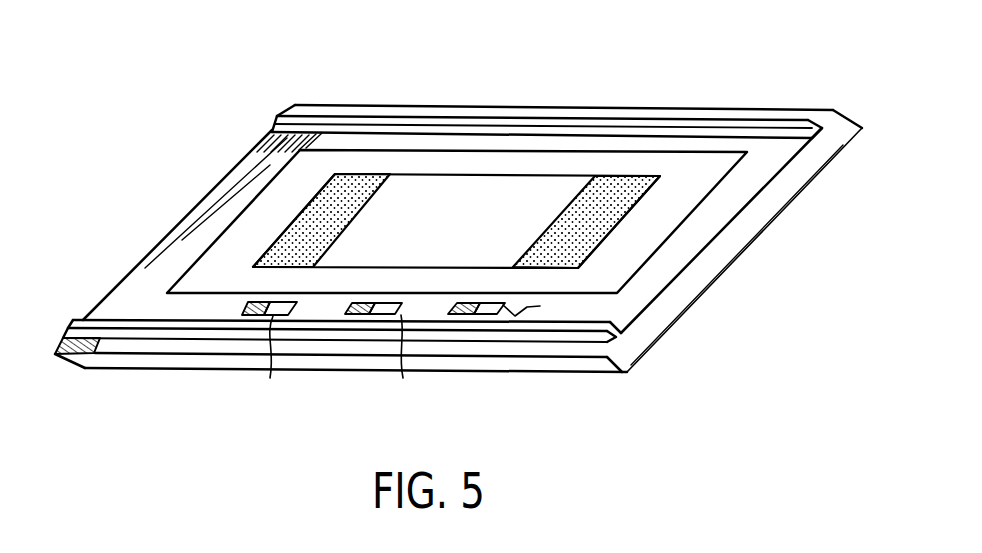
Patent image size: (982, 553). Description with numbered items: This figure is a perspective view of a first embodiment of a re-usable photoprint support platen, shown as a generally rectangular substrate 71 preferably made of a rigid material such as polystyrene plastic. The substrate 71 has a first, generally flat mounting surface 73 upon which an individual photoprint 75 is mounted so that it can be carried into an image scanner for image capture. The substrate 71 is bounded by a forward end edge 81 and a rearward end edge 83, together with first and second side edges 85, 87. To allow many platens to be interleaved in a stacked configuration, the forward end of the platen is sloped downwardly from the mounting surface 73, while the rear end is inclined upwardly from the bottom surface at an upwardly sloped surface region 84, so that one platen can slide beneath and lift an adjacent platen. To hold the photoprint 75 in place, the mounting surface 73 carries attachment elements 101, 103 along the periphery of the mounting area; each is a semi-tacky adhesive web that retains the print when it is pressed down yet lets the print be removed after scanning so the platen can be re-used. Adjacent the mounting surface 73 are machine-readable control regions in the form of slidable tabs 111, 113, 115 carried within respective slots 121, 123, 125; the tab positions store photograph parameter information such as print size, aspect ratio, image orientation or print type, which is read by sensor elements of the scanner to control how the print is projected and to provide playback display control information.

The substrate 71 is at (737, 83).
The mounting surface 73 is at (752, 172).
The photoprint 75 is at (468, 180).
The forward end edge 81 is at (662, 313).
The rearward end edge 83 is at (156, 250).
The upwardly sloped surface region 84 is at (73, 367).
The first side edge 85 is at (627, 105).
The second side edge 87 is at (335, 370).
The attachment element 101 is at (331, 209).
The attachment element 103 is at (537, 243).
The slidable tab 111 is at (247, 304).
The slidable tab 113 is at (353, 303).
The slidable tab 115 is at (441, 299).
The slot 121 is at (268, 357).
The slot 123 is at (429, 357).
The slot 125 is at (545, 309).